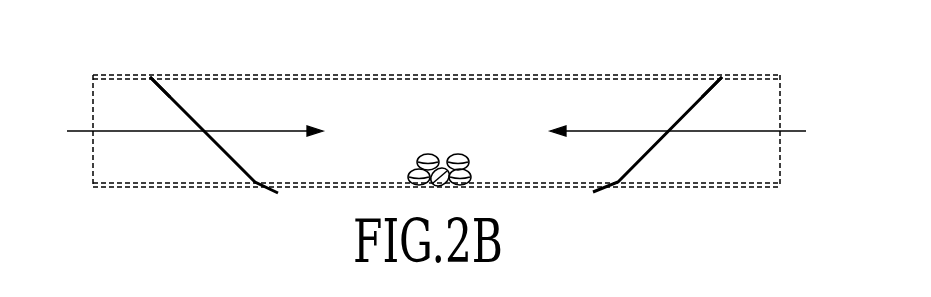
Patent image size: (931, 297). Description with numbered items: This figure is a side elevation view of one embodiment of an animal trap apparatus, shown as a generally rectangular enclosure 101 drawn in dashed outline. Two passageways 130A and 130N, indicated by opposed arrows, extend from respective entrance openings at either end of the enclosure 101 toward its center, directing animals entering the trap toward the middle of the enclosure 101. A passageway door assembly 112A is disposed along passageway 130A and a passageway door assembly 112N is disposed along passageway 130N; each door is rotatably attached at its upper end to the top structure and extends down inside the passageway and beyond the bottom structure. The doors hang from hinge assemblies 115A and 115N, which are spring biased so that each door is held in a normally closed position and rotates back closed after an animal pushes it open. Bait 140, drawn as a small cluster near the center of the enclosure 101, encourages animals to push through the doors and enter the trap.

The enclosure 101 is at (780, 80).
The passageway door assembly 112A is at (185, 109).
The passageway door assembly 112N is at (689, 109).
The hinge assembly 115A is at (150, 75).
The hinge assembly 115N is at (722, 75).
The passageway 130A is at (164, 130).
The passageway 130N is at (710, 130).
The bait 140 is at (460, 154).